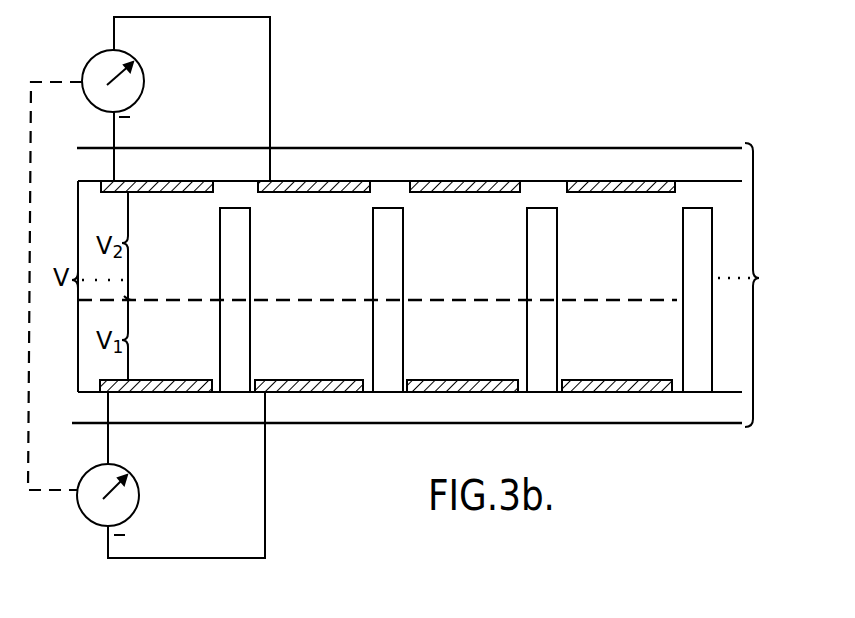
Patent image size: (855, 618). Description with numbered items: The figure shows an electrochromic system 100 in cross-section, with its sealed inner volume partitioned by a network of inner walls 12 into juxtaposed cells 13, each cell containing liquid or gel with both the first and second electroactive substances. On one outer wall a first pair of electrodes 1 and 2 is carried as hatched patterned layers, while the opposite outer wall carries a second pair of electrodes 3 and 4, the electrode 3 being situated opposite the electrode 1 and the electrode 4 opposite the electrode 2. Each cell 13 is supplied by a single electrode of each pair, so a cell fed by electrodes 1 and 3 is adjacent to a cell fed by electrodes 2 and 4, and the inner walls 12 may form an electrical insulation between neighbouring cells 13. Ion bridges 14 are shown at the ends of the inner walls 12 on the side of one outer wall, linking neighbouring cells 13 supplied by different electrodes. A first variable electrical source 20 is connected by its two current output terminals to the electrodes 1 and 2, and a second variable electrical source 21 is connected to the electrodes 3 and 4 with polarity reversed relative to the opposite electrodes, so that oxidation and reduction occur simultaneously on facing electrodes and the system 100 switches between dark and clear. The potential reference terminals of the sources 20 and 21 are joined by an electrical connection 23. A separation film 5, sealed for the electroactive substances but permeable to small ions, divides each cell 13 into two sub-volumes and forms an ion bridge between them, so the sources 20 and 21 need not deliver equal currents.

The electrode 1 is at (147, 392).
The electrode 2 is at (302, 392).
The electrode 3 is at (162, 185).
The electrode 4 is at (313, 181).
The separation film 5 is at (627, 296).
The inner walls 12 is at (228, 350).
The cells 13 is at (173, 243).
The ion bridge 14 is at (232, 198).
The first variable electrical source 20 is at (84, 514).
The second variable electrical source 21 is at (86, 64).
The electrical connection 23 is at (33, 435).
The electrochromic system 100 is at (763, 285).